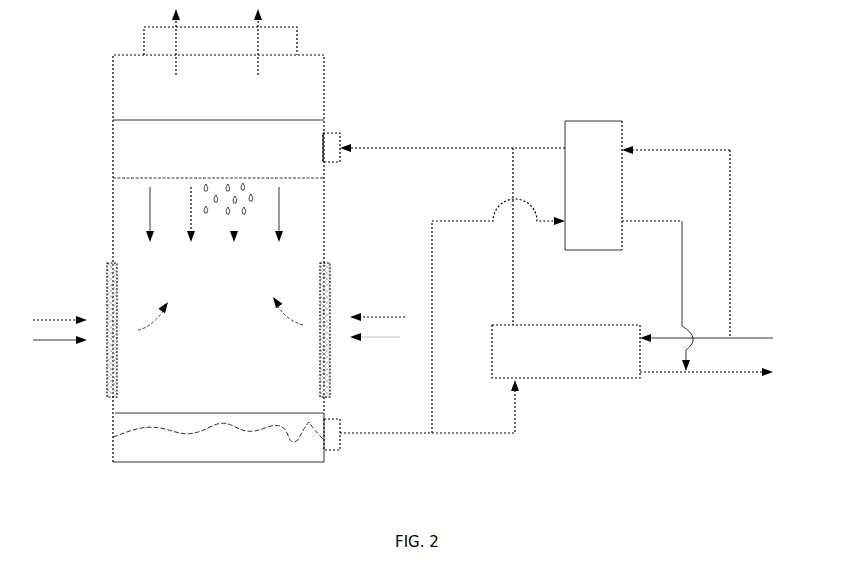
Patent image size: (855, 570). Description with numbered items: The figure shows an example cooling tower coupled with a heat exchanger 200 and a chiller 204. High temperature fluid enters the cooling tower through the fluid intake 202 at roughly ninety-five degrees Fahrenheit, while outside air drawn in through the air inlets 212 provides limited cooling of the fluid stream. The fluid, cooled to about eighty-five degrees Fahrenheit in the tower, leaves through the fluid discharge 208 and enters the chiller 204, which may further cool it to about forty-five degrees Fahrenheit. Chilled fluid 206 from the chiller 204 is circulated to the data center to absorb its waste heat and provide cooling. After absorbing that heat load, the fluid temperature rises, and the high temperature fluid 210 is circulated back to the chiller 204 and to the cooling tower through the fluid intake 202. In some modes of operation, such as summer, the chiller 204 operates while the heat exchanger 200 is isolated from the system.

The heat exchanger 200 is at (594, 120).
The fluid intake 202 is at (330, 130).
The chiller 204 is at (583, 380).
The chilled fluid 206 is at (760, 375).
The fluid discharge 208 is at (335, 422).
The high temperature fluid 210 is at (740, 338).
The air inlets 212 is at (330, 283).